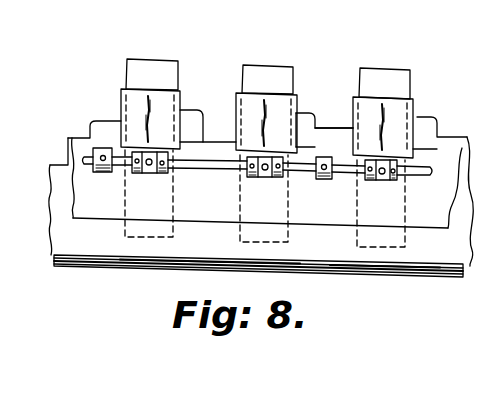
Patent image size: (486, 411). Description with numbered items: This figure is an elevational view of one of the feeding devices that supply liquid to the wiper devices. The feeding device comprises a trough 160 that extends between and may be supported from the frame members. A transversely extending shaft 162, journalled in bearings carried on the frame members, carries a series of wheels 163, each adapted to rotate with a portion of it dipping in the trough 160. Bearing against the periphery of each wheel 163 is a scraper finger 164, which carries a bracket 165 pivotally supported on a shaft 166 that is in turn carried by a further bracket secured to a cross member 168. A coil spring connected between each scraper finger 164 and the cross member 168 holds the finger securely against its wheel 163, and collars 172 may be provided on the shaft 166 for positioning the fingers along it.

The trough 160 is at (360, 262).
The shaft 162 is at (335, 128).
The wheel 163 is at (252, 75).
The scraper finger 164 is at (247, 102).
The bracket 165 is at (148, 173).
The shaft 166 is at (305, 171).
The cross member 168 is at (100, 207).
The collar 172 is at (135, 173).